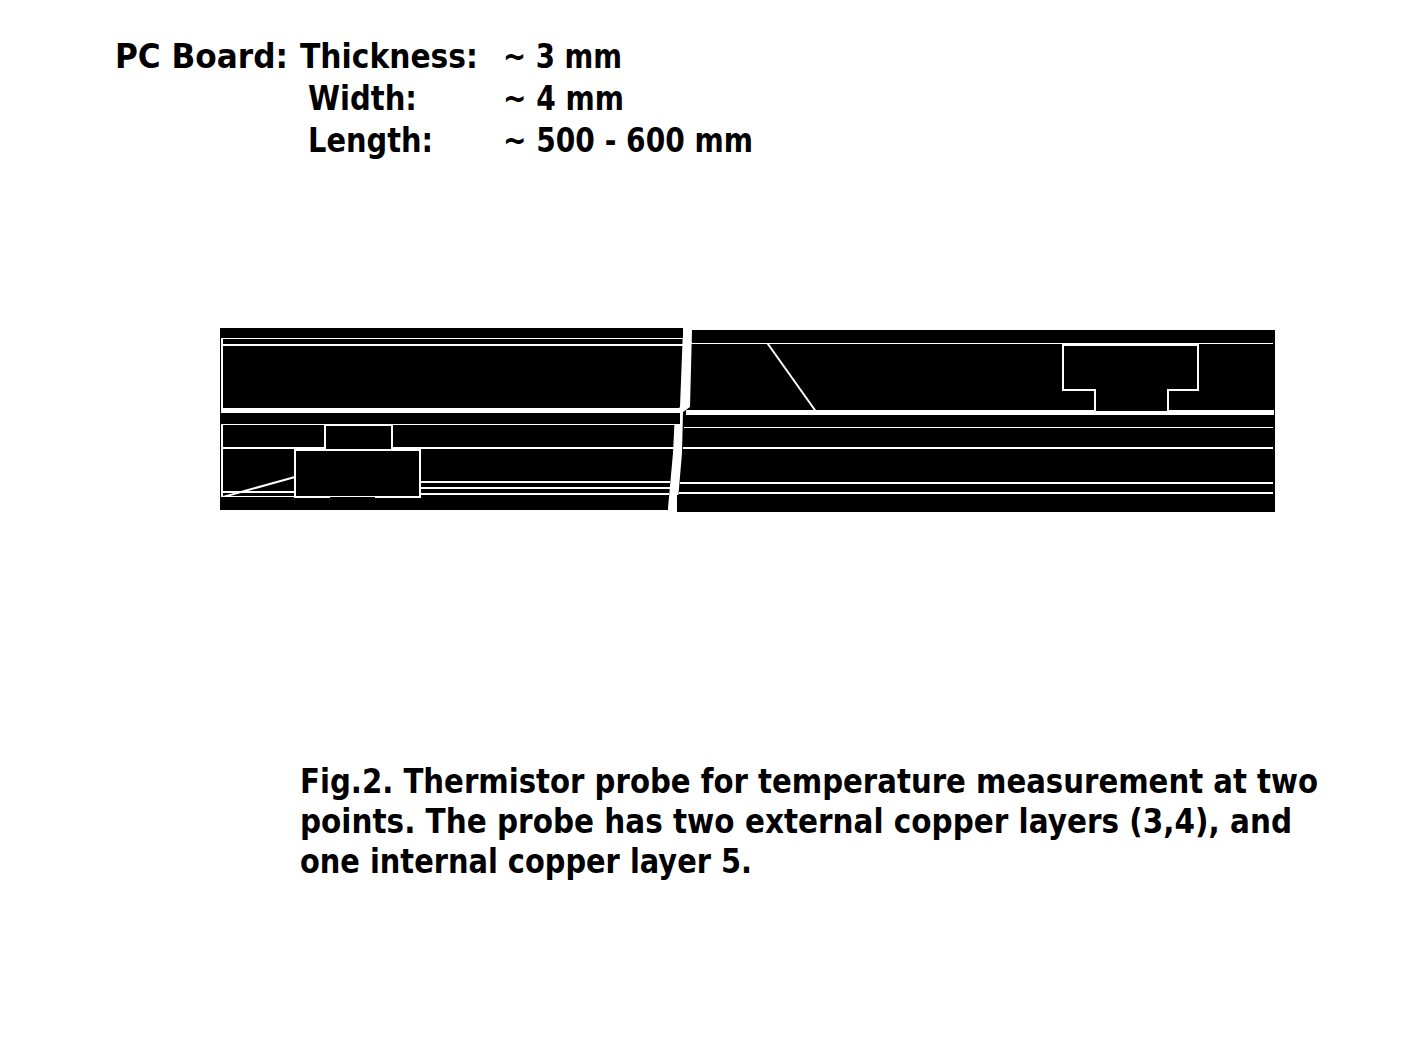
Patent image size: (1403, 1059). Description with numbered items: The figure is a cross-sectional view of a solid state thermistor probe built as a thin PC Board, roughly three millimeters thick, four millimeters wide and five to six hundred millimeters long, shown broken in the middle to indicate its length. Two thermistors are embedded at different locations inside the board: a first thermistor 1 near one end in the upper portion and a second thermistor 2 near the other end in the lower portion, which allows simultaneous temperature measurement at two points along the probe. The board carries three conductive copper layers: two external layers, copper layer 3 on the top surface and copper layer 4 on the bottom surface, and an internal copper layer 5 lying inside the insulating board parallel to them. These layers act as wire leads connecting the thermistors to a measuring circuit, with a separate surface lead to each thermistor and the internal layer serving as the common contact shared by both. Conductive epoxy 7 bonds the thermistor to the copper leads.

The thermistor 1 is at (1140, 330).
The thermistor 2 is at (220, 505).
The copper layer (external) 3 is at (287, 328).
The insulator (PC Board) 4 is at (930, 510).
The copper layer (internal) 5 is at (753, 332).
The conductive epoxy 7 is at (333, 510).